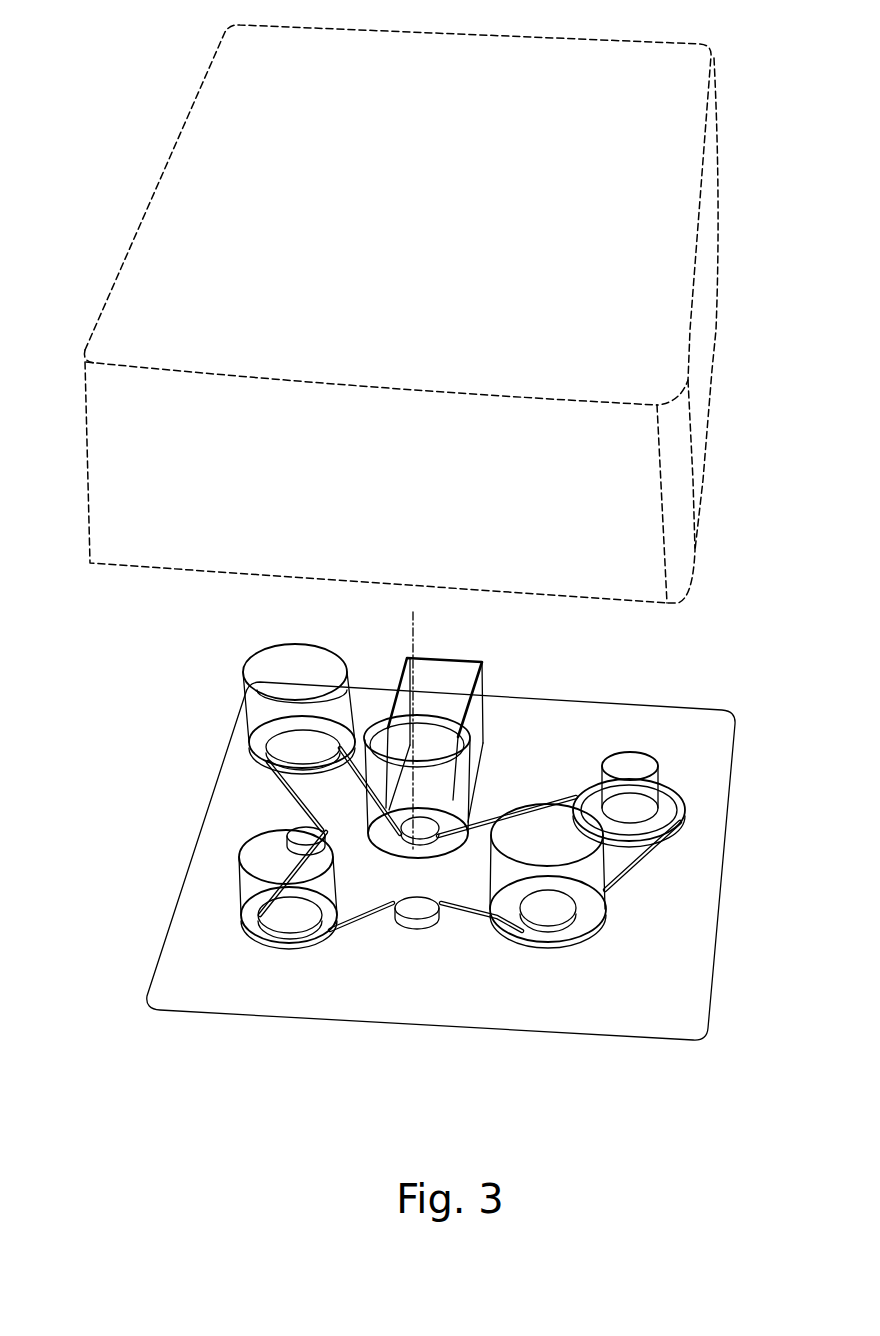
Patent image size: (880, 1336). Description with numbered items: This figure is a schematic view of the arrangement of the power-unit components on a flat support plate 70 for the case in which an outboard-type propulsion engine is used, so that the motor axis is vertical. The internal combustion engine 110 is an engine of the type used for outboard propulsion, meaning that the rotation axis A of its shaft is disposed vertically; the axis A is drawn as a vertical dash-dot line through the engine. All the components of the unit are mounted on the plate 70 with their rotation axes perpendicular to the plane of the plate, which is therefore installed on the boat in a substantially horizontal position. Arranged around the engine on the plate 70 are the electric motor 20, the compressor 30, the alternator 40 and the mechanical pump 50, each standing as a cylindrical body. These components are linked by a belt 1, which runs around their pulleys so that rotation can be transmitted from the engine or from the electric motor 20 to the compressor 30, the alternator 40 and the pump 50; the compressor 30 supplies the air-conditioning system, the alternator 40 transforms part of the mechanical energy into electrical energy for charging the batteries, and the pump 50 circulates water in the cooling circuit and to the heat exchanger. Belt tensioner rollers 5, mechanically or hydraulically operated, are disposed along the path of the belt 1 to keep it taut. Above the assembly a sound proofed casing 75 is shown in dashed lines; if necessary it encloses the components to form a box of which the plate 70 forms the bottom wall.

The belt 1 is at (353, 928).
The belt tensioner rollers 5 is at (300, 828).
The electric motor 20 is at (270, 665).
The compressor 30 is at (250, 890).
The alternator 40 is at (590, 873).
The mechanical pump 50 is at (637, 765).
The flat support plate 70 is at (208, 973).
The sound proofed casing 75 is at (148, 581).
The internal combustion engine 110 is at (445, 680).
The rotation axis A is at (416, 633).